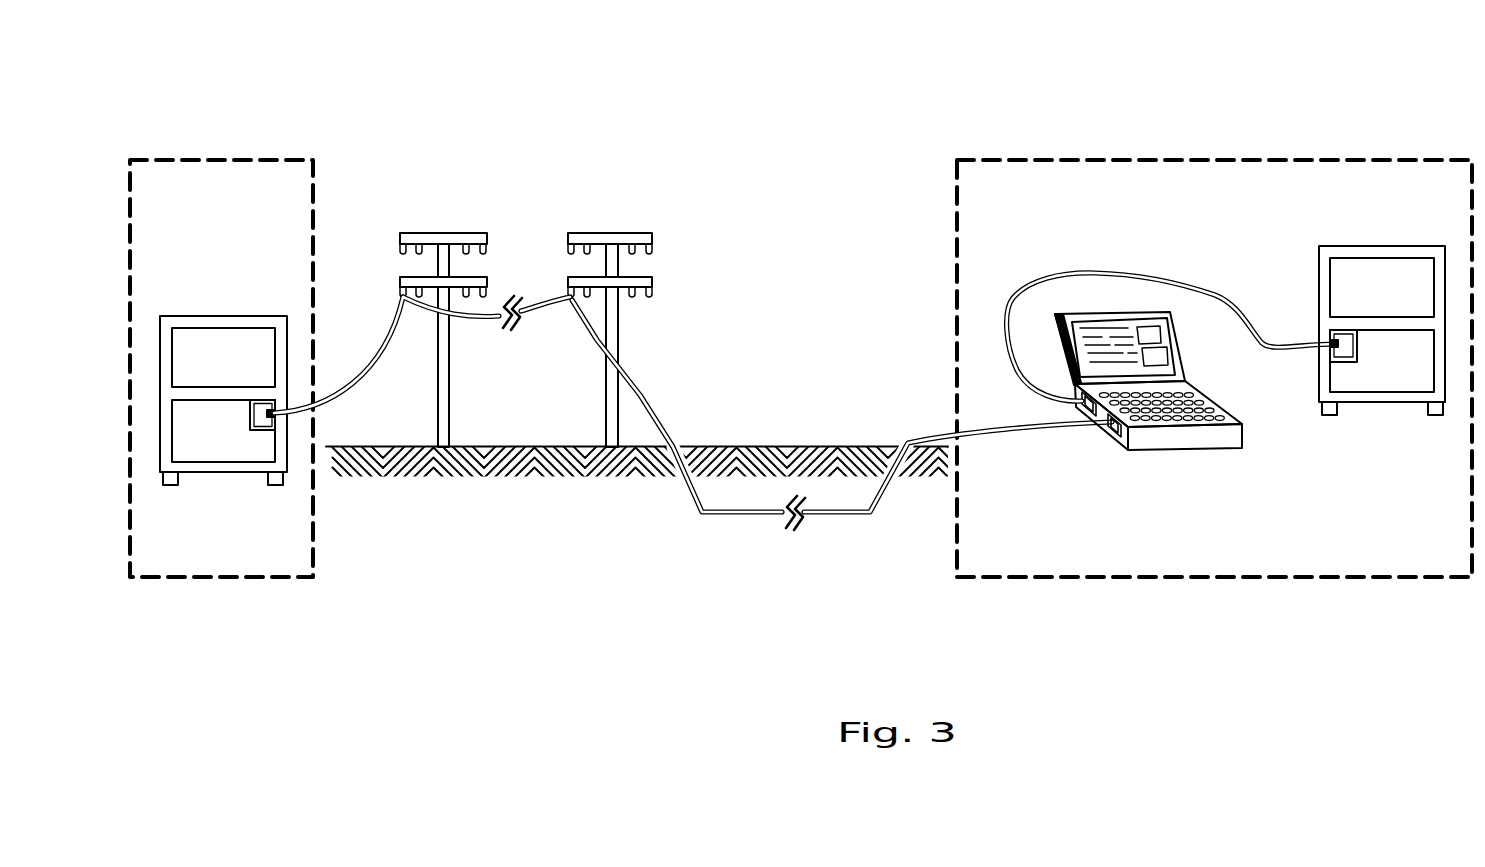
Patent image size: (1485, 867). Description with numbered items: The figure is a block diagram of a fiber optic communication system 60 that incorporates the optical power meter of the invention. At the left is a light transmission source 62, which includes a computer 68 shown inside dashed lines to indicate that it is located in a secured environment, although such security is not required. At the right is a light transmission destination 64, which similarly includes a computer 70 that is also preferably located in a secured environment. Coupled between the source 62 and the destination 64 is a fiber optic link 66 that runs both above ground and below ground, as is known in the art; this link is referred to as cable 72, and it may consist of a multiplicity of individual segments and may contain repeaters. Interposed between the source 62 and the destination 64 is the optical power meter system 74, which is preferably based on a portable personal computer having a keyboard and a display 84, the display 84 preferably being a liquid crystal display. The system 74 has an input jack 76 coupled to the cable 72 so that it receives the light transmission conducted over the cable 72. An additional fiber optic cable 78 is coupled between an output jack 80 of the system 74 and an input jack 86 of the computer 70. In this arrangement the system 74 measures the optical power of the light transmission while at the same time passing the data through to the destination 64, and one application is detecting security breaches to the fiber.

The fiber optic communication system 60 is at (648, 77).
The light transmission source 62 is at (258, 580).
The light transmission destination 64 is at (1315, 580).
The fiber optic link 66 is at (606, 603).
The computer 68 is at (232, 473).
The computer 70 is at (1354, 359).
The cable 72 is at (641, 393).
The optical power meter system 74 is at (1125, 425).
The input jack 76 is at (1113, 432).
The fiber optic cable 78 is at (1097, 273).
The output jack 80 is at (1084, 414).
The display 84 is at (1177, 337).
The input jack 86 is at (1337, 340).